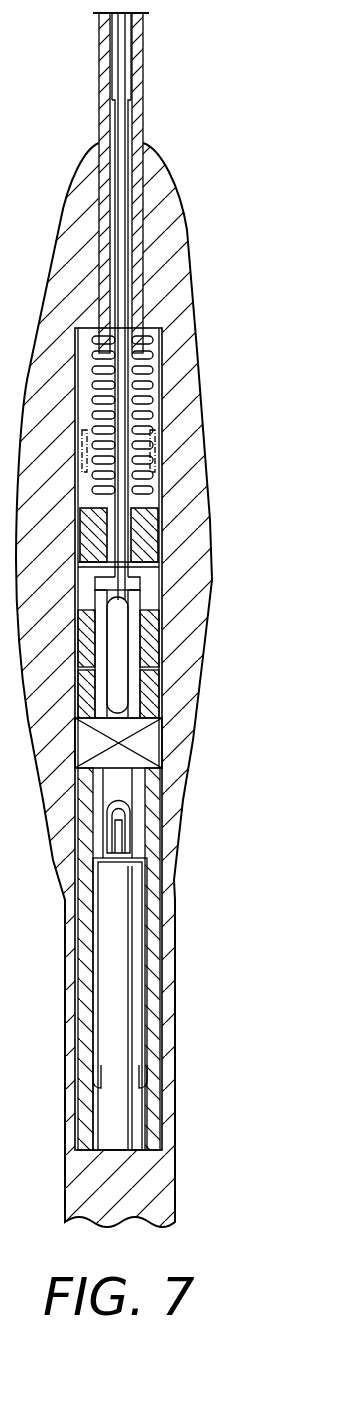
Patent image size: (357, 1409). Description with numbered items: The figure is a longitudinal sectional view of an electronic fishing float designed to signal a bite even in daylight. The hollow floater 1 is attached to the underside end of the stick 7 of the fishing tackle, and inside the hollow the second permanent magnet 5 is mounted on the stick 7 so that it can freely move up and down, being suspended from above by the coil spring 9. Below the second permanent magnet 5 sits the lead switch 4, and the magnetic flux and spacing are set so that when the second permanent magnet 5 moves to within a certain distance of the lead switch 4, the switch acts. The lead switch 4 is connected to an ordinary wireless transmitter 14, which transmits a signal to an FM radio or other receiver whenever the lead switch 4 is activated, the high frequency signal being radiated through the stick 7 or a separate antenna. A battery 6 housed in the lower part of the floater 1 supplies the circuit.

The floater 1 is at (195, 393).
The stick 7 is at (137, 70).
The coil spring 9 is at (150, 420).
The second permanent magnet 5 is at (163, 530).
The lead switch 4 is at (120, 620).
The wireless transmitter 14 is at (150, 735).
The battery 6 is at (118, 940).